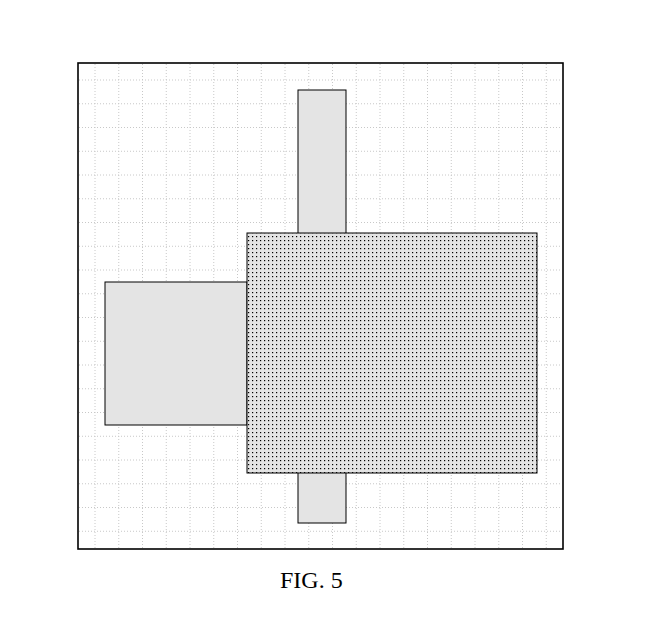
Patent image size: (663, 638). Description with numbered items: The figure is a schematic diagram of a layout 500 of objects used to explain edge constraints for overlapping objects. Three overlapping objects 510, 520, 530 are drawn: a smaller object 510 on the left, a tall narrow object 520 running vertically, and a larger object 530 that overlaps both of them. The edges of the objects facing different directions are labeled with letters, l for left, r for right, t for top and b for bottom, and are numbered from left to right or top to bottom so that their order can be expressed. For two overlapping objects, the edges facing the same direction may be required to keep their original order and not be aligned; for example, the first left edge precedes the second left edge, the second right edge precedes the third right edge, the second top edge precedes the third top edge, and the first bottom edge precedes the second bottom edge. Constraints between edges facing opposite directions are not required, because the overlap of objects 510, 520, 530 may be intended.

The grid layout diagram 500 is at (320, 278).
The overlapping object 510 is at (124, 282).
The overlapping object 520 is at (345, 122).
The overlapping object 530 is at (403, 233).